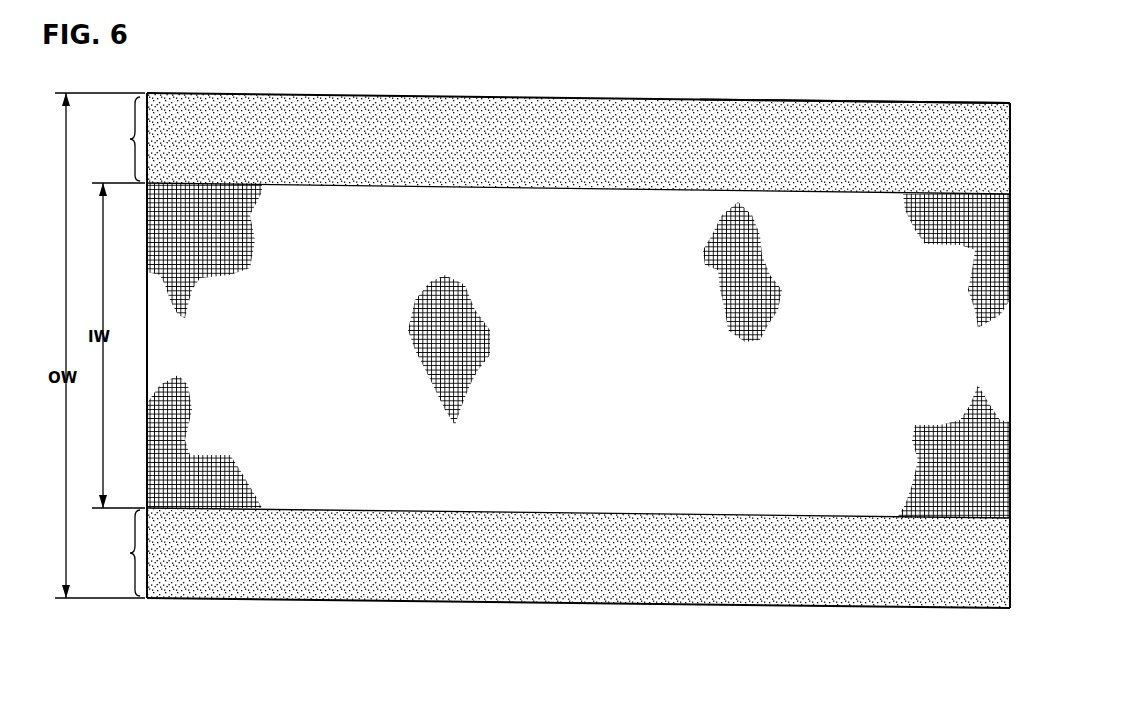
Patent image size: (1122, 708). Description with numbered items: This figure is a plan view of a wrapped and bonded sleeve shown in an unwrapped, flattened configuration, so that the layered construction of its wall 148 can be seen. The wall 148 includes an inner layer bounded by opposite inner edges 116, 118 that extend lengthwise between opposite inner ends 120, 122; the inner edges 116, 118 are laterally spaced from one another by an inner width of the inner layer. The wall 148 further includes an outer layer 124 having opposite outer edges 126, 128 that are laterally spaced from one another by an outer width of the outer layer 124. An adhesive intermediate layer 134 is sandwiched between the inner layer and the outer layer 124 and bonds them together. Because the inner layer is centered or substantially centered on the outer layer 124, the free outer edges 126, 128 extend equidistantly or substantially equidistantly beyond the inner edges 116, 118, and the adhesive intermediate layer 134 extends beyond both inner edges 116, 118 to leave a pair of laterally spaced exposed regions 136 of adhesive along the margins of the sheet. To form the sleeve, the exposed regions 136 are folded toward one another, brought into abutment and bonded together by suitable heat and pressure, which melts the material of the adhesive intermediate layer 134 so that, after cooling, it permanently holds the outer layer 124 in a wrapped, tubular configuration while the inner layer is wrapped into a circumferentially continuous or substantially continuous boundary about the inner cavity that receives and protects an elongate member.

The inner edge 116 is at (940, 193).
The inner edge 118 is at (963, 520).
The inner end 120 is at (147, 283).
The inner end 122 is at (1010, 333).
The outer layer 124 is at (808, 101).
The outer edge 126 is at (927, 102).
The outer edge 128 is at (912, 610).
The adhesive intermediate layer 134 is at (736, 130).
The exposed region 136 is at (118, 346).
The wall 148 is at (576, 97).